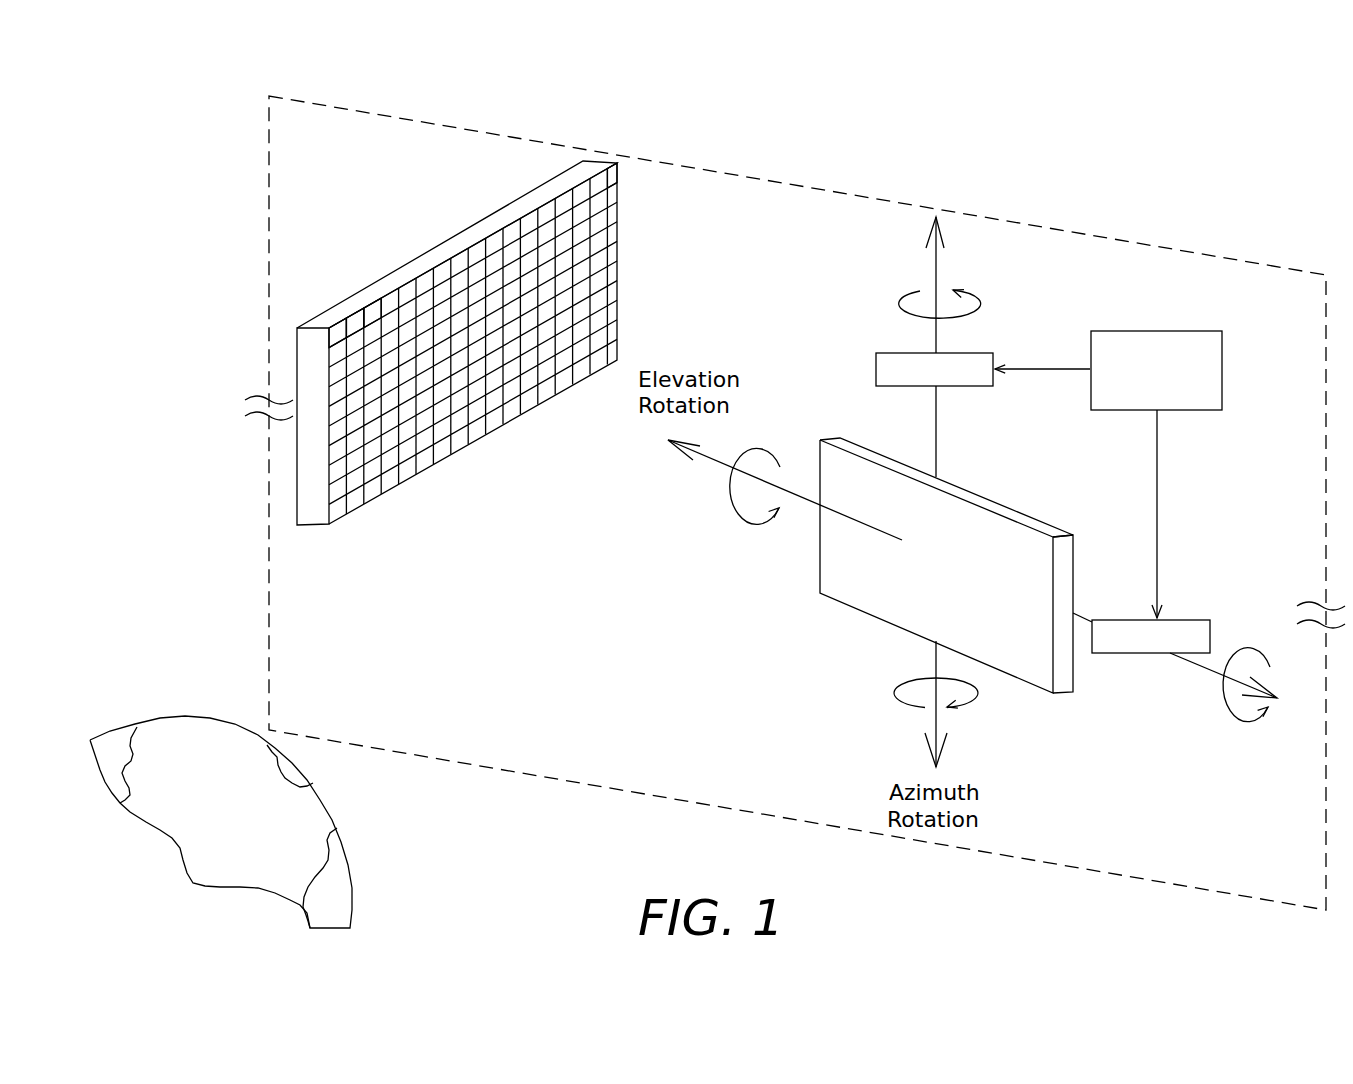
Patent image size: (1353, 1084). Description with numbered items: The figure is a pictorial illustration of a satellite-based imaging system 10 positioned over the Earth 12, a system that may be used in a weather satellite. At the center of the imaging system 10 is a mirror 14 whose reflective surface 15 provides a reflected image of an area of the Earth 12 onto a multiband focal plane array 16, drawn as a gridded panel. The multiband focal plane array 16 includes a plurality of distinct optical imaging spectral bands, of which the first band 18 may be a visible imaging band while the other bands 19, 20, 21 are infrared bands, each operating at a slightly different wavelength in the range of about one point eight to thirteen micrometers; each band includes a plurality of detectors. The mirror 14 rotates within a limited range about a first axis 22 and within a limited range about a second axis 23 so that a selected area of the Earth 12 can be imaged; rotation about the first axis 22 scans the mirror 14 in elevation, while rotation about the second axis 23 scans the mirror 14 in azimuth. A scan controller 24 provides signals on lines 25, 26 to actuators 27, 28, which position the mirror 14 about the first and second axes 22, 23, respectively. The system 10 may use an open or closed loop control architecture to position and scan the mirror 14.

The satellite-based imaging system 10 is at (1183, 250).
The Earth 12 is at (345, 837).
The mirror 14 is at (1012, 509).
The reflective surface 15 is at (890, 604).
The multiband focal plane array 16 is at (495, 209).
The first band 18 is at (338, 333).
The band 19 is at (355, 320).
The band 20 is at (370, 315).
The band 21 is at (608, 160).
The first axis 22 is at (818, 505).
The second axis 23 is at (936, 658).
The scan controller 24 is at (1205, 332).
The line 25 is at (1017, 367).
The line 26 is at (1158, 522).
The actuator 27 is at (915, 353).
The actuator 28 is at (1190, 620).